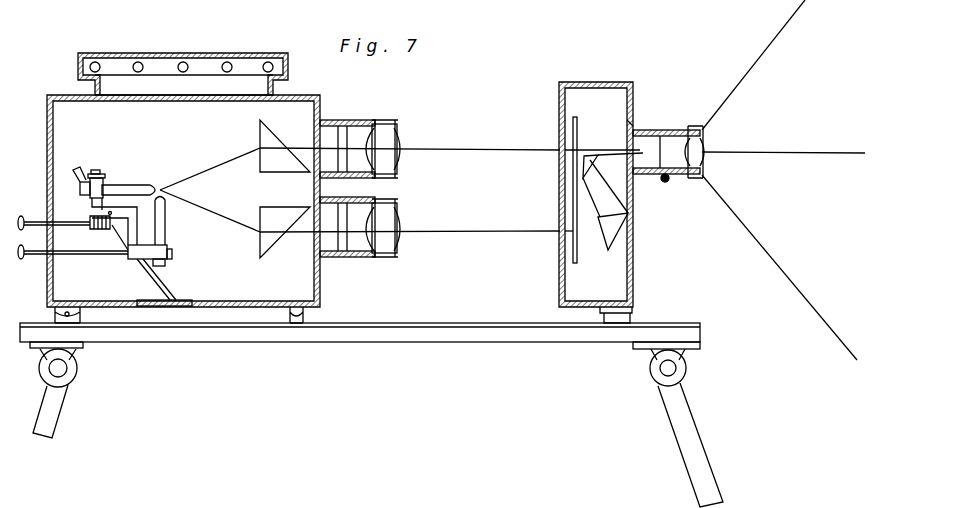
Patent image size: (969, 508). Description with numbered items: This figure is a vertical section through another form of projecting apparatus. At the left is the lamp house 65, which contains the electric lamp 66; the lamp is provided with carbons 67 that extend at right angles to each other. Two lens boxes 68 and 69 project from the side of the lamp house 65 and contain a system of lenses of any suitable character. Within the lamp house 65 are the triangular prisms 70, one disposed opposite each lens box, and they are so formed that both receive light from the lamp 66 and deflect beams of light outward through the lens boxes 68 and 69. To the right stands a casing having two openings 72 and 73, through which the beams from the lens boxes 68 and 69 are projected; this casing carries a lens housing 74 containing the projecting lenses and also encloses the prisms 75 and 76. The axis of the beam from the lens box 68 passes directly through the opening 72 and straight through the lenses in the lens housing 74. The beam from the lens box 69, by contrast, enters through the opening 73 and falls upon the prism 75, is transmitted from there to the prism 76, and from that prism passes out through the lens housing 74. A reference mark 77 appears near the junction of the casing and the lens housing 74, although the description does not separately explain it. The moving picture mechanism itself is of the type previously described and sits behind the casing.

The lamp house 65 is at (371, 280).
The electric lamp 66 is at (114, 180).
The carbons 67 is at (166, 238).
The lens box 68 is at (343, 125).
The lens box 69 is at (343, 260).
The triangular prisms 70 is at (270, 134).
The opening 72 is at (562, 142).
The opening 73 is at (562, 238).
The lens housing 74 is at (648, 132).
The prism 75 is at (629, 214).
The prism 76 is at (613, 185).
The tube flange 77 is at (627, 118).